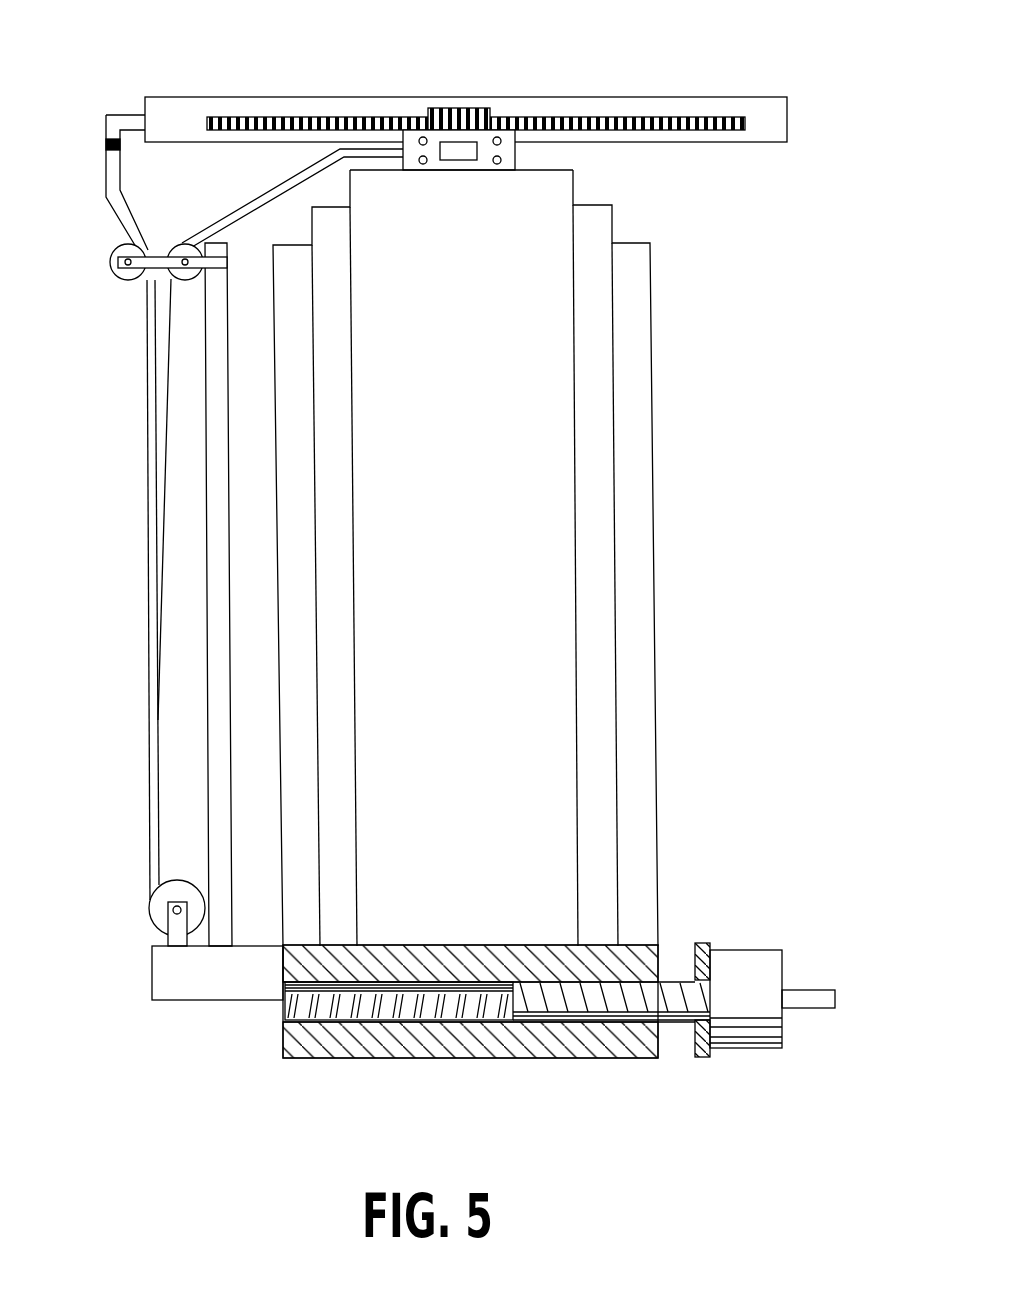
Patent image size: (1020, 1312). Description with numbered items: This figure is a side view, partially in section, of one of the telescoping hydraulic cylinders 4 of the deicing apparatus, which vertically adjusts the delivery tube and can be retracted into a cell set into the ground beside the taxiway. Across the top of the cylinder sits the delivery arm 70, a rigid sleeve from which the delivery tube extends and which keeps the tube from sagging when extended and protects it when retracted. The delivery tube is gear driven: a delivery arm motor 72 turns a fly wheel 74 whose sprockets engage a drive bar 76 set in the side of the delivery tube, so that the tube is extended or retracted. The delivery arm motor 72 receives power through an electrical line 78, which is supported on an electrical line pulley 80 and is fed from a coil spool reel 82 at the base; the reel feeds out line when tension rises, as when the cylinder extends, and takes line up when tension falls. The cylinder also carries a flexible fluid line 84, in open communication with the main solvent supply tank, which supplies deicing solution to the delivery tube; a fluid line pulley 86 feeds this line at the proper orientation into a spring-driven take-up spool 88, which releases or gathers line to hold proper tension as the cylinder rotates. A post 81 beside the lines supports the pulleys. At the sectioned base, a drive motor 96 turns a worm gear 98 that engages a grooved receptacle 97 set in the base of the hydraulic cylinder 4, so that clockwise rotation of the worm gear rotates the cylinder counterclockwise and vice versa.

The telescoping hydraulic cylinder 4 is at (654, 592).
The delivery arm 70 is at (644, 100).
The delivery arm motor 72 is at (466, 161).
The fly wheel 74 is at (470, 112).
The drive bar 76 is at (347, 116).
The electrical line 78 is at (221, 218).
The electrical line pulley 80 is at (185, 280).
The support post 81 is at (222, 600).
The coil spool reel 82 is at (162, 918).
The flexible fluid line 84 is at (146, 393).
The fluid line pulley 86 is at (120, 272).
The spring-driven take-up spool 88 is at (152, 898).
The drive motor 96 is at (760, 983).
The grooved receptacle 97 is at (418, 1023).
The worm gear 98 is at (672, 980).